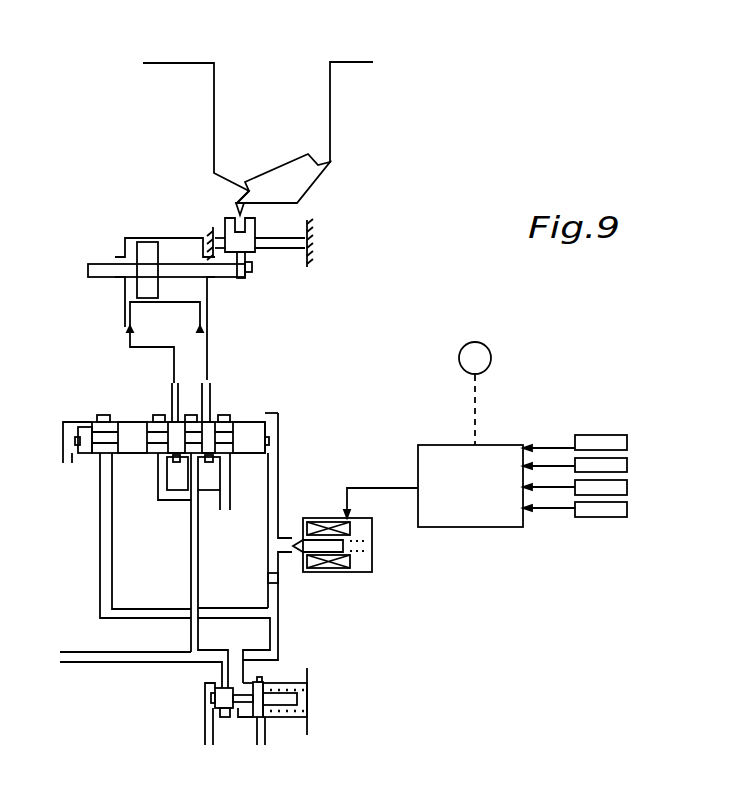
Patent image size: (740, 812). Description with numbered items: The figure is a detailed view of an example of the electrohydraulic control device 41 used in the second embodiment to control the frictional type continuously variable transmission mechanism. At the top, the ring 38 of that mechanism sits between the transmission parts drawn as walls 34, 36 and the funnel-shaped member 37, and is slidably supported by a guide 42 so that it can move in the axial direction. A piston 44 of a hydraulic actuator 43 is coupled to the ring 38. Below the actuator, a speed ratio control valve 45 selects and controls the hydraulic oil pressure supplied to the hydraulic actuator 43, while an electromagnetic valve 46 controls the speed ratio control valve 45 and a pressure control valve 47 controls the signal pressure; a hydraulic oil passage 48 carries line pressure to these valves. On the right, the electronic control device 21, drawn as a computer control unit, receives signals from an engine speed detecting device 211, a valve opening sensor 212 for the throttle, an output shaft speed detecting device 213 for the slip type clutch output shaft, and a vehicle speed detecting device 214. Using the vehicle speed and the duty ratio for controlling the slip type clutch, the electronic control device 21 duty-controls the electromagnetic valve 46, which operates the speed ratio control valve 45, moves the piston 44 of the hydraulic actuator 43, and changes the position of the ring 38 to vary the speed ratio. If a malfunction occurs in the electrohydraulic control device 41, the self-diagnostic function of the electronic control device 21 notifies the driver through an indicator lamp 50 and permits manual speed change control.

The electronic control device 21 is at (436, 530).
The right wall 34 is at (330, 102).
The left wall / chute 36 is at (214, 112).
The funnel 37 is at (318, 173).
The ring 38 is at (235, 208).
The electrohydraulic control device 41 is at (352, 338).
The guide 42 is at (290, 250).
The hydraulic actuator 43 is at (160, 238).
The piston 44 is at (123, 257).
The speed ratio control valve 45 is at (240, 413).
The electromagnetic valve 46 is at (327, 514).
The pressure control valve 47 is at (314, 701).
The hydraulic oil passage for line pressure 48 is at (205, 577).
The indicator lamp 50 is at (460, 350).
The engine speed detecting device 211 is at (628, 438).
The valve opening sensor 212 is at (627, 465).
The output shaft speed detecting device 213 is at (627, 487).
The vehicle speed detecting device 214 is at (622, 513).